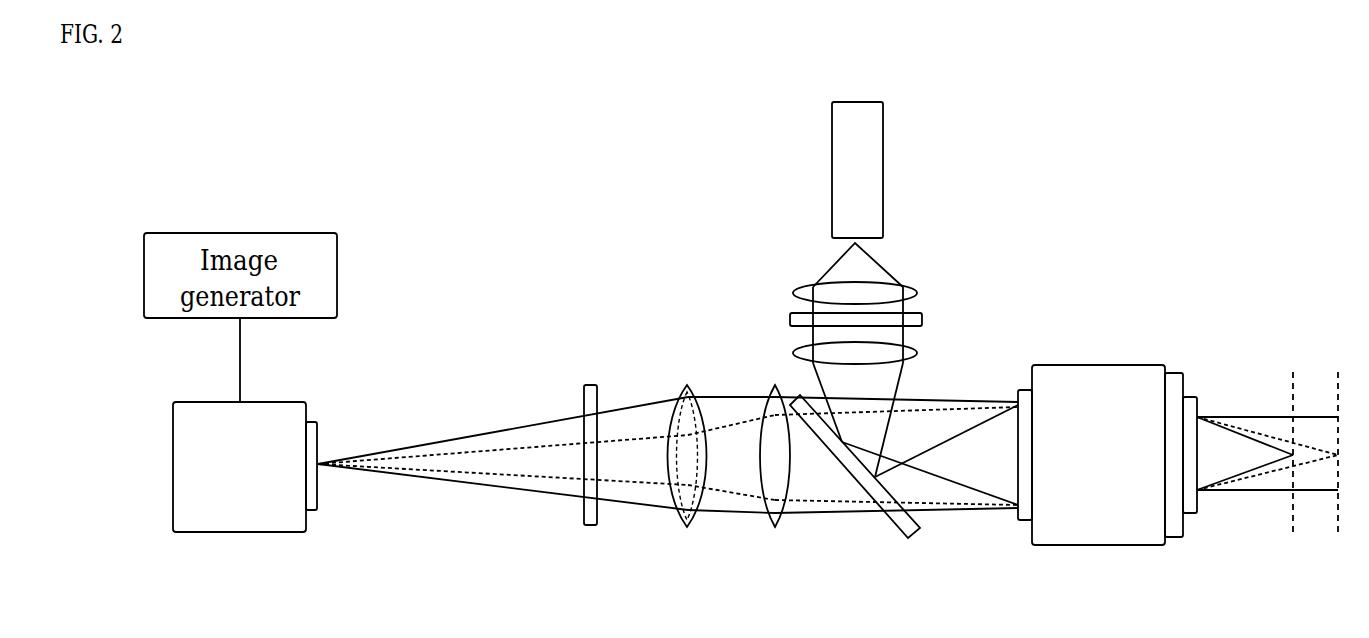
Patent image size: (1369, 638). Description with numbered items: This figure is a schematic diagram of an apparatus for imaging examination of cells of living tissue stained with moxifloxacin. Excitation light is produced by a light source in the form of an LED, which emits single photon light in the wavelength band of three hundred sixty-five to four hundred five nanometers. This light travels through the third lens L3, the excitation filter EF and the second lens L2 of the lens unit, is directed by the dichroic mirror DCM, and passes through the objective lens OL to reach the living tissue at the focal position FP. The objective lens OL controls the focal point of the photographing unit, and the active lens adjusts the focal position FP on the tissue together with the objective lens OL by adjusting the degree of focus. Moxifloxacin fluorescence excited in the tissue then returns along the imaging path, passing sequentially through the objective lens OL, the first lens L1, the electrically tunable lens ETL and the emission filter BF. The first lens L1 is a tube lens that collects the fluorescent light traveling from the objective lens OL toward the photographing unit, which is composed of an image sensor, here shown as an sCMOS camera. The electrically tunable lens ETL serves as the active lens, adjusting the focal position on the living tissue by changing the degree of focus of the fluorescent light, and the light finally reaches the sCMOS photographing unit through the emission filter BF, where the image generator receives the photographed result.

The sCMOS camera sCMOS is at (245, 467).
The emission filter BF is at (584, 475).
The electrically tunable lens ETL is at (688, 475).
The first lens L1 is at (775, 475).
The dichroic mirror DCM is at (855, 480).
The element LED is at (857, 170).
The third lens L3 is at (832, 293).
The excitation filter EF is at (885, 309).
The second lens L2 is at (832, 353).
The objective lens OL is at (1107, 478).
The focal position FP is at (1267, 419).